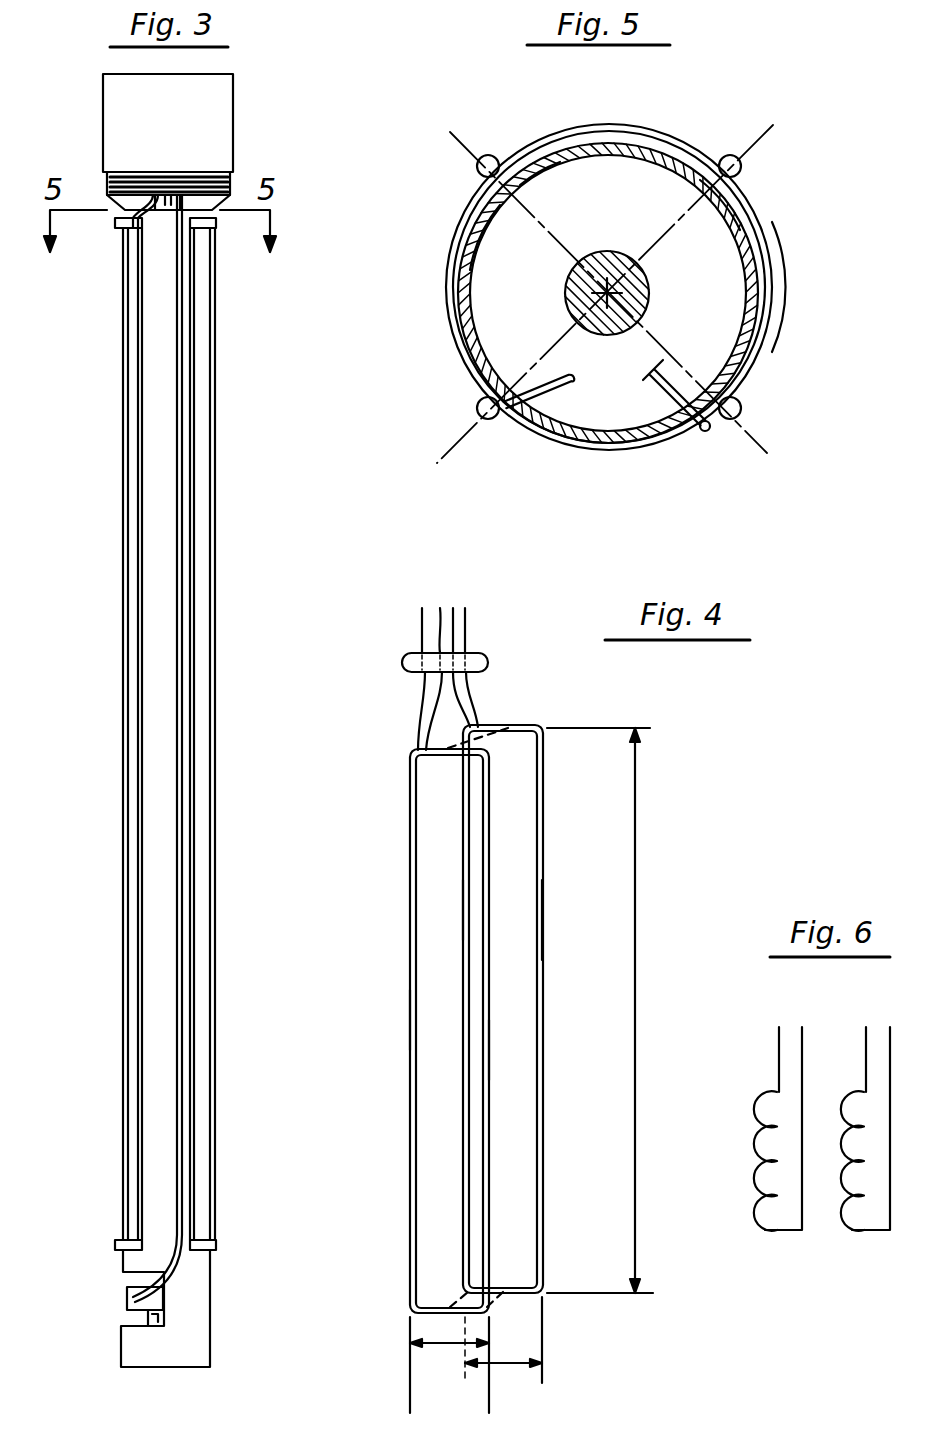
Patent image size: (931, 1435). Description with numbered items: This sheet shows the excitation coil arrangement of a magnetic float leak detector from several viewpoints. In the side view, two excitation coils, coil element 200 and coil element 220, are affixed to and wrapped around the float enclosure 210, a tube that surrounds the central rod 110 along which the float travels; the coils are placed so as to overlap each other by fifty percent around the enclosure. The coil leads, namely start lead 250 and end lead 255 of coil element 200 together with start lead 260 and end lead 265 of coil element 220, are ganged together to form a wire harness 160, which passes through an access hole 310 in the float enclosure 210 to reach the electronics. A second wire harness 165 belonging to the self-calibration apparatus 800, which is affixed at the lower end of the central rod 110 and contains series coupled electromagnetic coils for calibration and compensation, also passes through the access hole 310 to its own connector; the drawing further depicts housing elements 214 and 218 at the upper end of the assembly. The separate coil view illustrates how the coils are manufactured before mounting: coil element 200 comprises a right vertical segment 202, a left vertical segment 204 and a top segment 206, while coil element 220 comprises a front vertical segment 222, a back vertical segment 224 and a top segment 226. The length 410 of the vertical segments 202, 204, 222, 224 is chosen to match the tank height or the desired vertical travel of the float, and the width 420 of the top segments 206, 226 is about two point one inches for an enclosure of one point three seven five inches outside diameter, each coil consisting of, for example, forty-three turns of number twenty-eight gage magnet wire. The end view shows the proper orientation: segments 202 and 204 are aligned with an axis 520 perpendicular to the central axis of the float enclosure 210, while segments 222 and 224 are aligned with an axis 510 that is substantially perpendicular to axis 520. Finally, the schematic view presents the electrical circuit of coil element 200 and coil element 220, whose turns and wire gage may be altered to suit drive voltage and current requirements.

In FIG. 5, the central rod 110 is at (565, 298).
In FIG. 3, the wire harness 160 is at (152, 205).
In FIG. 5, the wire harness 160 is at (583, 390).
In FIG. 4, the wire harness 160 is at (488, 662).
In FIG. 3, the wire harness 165 is at (181, 193).
In FIG. 5, the wire harness 165 is at (653, 395).
In FIG. 3, the coil element 200 is at (196, 803).
In FIG. 5, the coil element 200 is at (772, 222).
In FIG. 4, the coil element 200 is at (408, 817).
In FIG. 6, the coil element 200 is at (760, 1240).
In FIG. 5, the right vertical segment 202 is at (742, 410).
In FIG. 4, the right vertical segment 202 is at (410, 1022).
In FIG. 5, the left vertical segment 204 is at (490, 157).
In FIG. 4, the left vertical segment 204 is at (490, 1058).
In FIG. 5, the top segment 206 is at (647, 143).
In FIG. 3, the float enclosure 210 is at (212, 1283).
In FIG. 5, the float enclosure 210 is at (484, 226).
In FIG. 3, the connector housing 214 is at (233, 108).
In FIG. 3, the strain relief 218 is at (230, 172).
In FIG. 3, the coil element 220 is at (134, 788).
In FIG. 5, the coil element 220 is at (447, 330).
In FIG. 4, the coil element 220 is at (546, 833).
In FIG. 6, the coil element 220 is at (853, 1240).
In FIG. 5, the front vertical segment 222 is at (727, 157).
In FIG. 4, the front vertical segment 222 is at (463, 908).
In FIG. 5, the back vertical segment 224 is at (488, 420).
In FIG. 4, the back vertical segment 224 is at (540, 899).
In FIG. 5, the top segment 226 is at (563, 135).
In FIG. 4, the start lead 250 is at (422, 628).
In FIG. 4, the end lead 255 is at (440, 610).
In FIG. 4, the start lead 260 is at (453, 610).
In FIG. 4, the end lead 265 is at (468, 633).
In FIG. 3, the access hole 310 is at (168, 195).
In FIG. 4, the length 410 is at (633, 1212).
In FIG. 4, the width 420 is at (440, 1347).
In FIG. 5, the axis 510 is at (682, 222).
In FIG. 5, the axis 520 is at (548, 240).
In FIG. 3, the self-calibration apparatus 800 is at (128, 1297).